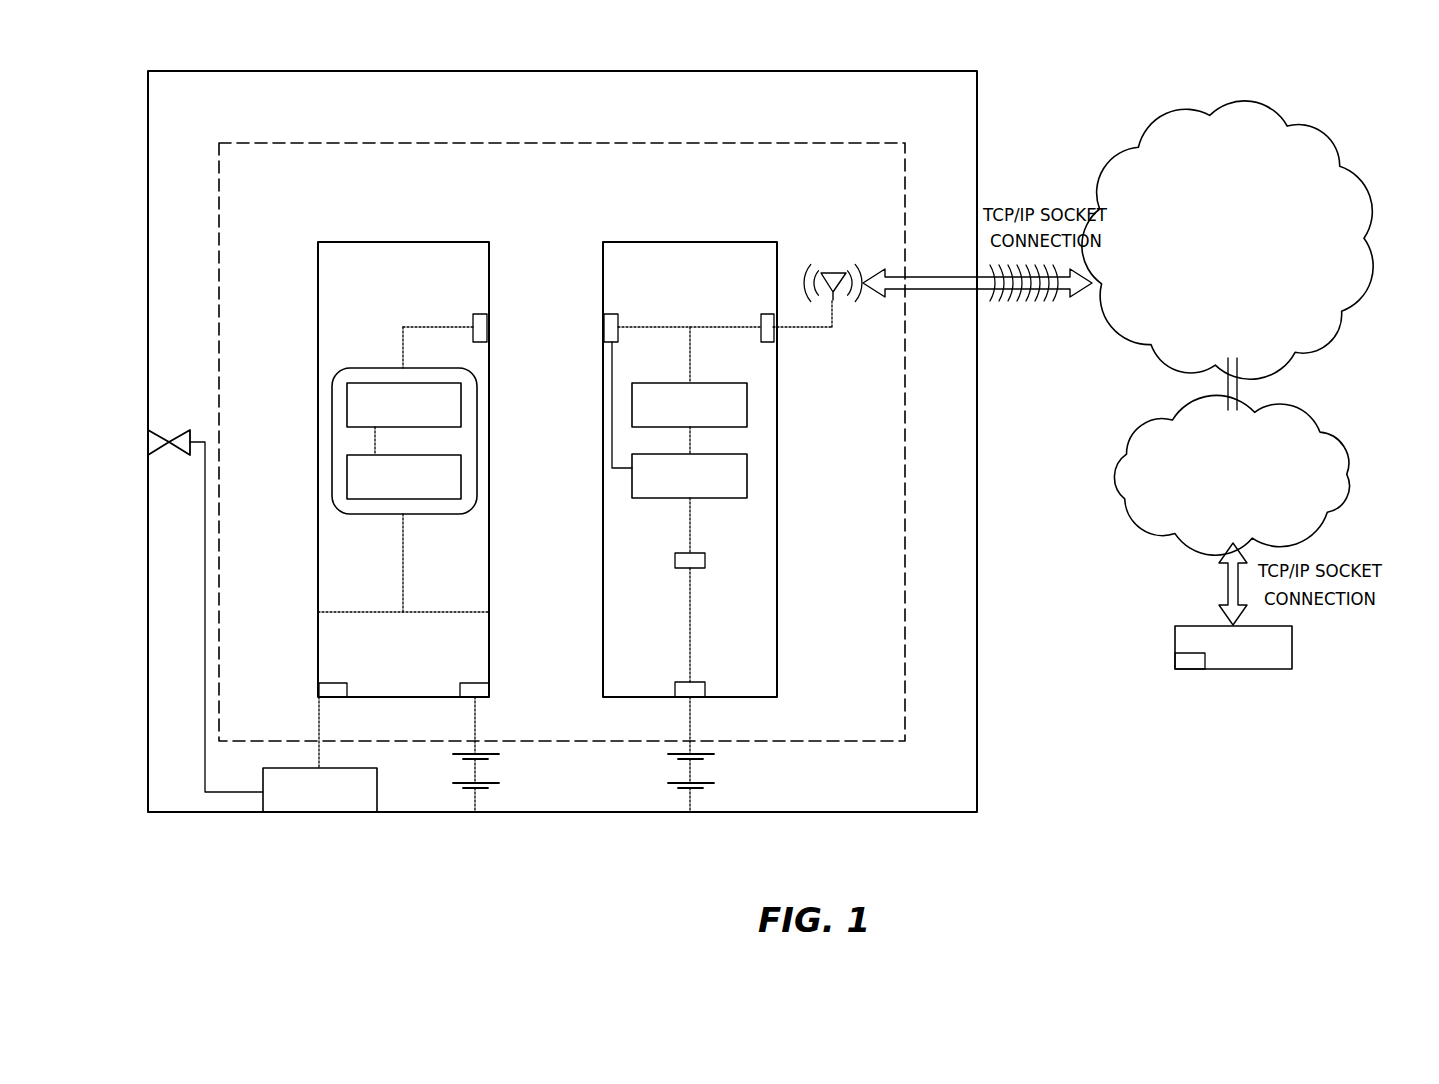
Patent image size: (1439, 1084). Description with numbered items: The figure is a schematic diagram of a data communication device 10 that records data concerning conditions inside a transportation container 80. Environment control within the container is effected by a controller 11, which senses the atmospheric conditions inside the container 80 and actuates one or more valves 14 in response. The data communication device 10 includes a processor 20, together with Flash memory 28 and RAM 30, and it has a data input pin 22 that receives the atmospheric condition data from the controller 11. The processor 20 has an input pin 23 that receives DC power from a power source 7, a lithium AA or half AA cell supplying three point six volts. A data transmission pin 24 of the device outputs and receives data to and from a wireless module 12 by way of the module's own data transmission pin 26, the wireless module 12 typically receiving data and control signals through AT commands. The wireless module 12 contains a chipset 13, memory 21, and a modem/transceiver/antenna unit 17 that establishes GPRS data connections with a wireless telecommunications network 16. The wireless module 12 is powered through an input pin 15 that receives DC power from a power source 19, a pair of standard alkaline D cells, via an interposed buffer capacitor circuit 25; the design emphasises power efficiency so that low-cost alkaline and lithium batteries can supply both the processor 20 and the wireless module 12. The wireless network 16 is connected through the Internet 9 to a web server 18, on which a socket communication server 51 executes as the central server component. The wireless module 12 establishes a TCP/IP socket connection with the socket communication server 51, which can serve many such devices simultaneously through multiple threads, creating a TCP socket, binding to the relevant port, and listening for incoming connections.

The transportation container 80 is at (148, 812).
The data communication device 10 is at (218, 178).
The valve 14 is at (178, 432).
The processor 20 is at (327, 650).
The RAM 30 is at (347, 403).
The Flash memory 28 is at (347, 474).
The data transmission pin 24 is at (477, 313).
The data input pin 22 is at (320, 690).
The input pin 23 is at (490, 689).
The wireless module 12 is at (777, 645).
The data transmission pin 26 is at (607, 313).
The modem/transceiver/antenna unit 17 is at (766, 313).
The memory 21 is at (747, 403).
The chipset 13 is at (747, 474).
The buffer capacitor circuit 25 is at (705, 560).
The input pin 15 is at (705, 688).
The wireless telecommunications network 16 is at (1366, 262).
The Internet 9 is at (1352, 470).
The web server 18 is at (1292, 645).
The socket communication server 51 is at (1175, 657).
The controller 11 is at (318, 812).
The power source 7 is at (470, 800).
The power source 19 is at (688, 800).